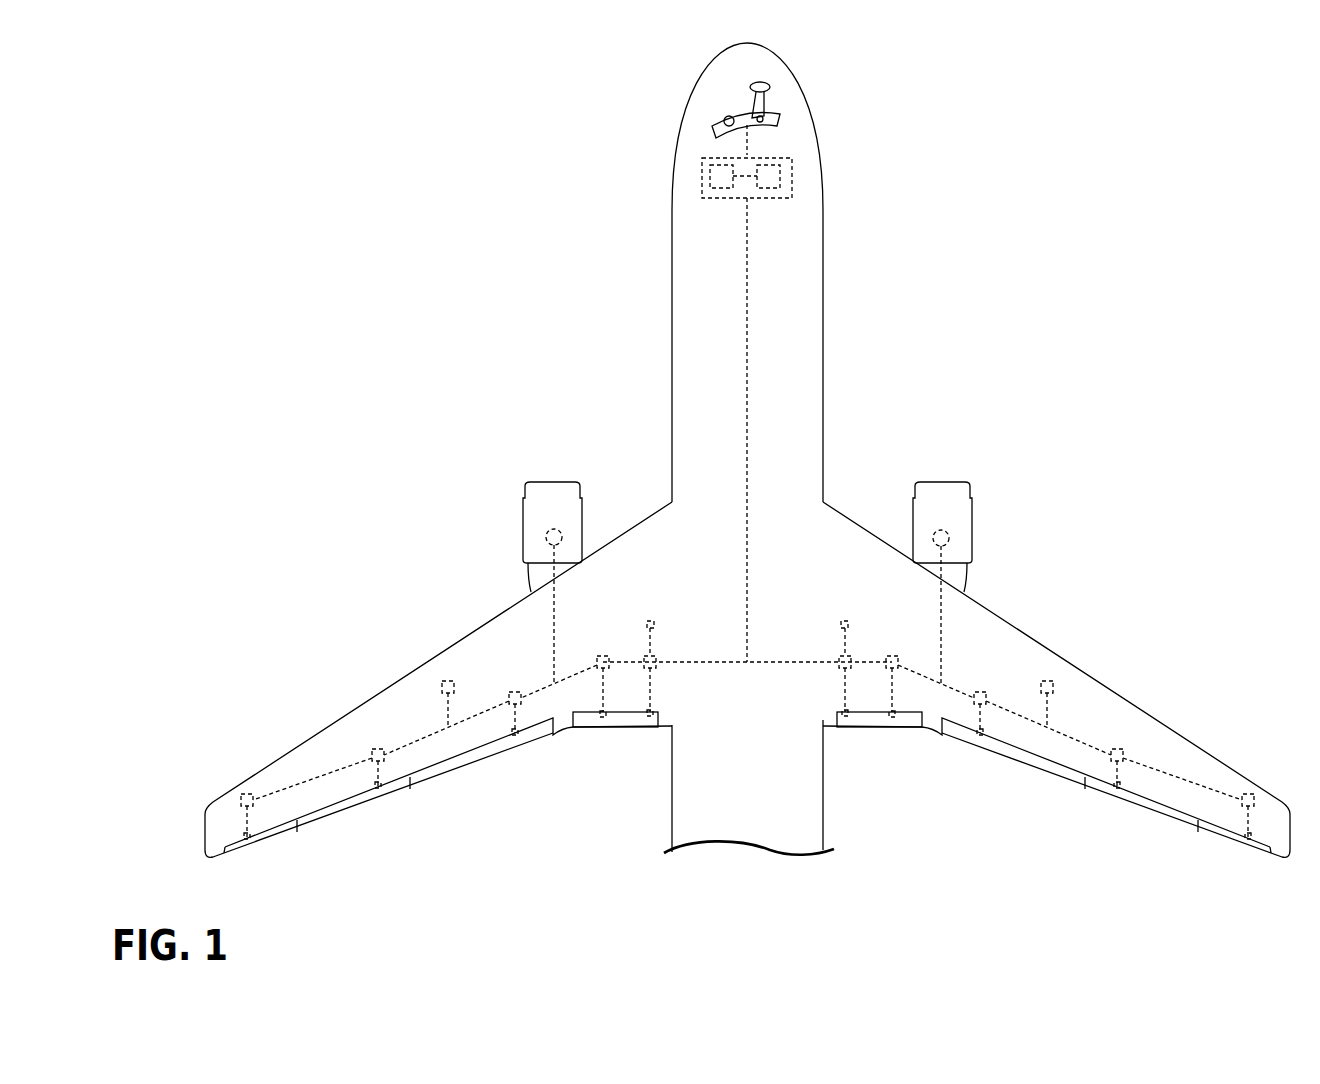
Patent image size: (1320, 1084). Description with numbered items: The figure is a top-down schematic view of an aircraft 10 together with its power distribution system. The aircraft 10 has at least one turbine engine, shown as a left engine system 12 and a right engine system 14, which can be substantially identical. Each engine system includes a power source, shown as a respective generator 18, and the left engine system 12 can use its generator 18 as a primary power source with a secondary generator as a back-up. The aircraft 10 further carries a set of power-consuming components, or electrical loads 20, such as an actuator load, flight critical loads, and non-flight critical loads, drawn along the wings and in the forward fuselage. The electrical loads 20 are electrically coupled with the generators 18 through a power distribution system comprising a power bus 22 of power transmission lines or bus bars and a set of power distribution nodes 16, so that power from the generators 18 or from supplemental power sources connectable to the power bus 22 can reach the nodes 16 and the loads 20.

The aircraft 10 is at (570, 69).
The left engine system 12 is at (553, 492).
The right engine system 14 is at (960, 492).
The power distribution nodes 16 is at (598, 670).
The generators 18 is at (565, 531).
The electrical loads 20 is at (710, 192).
The power bus 22 is at (748, 375).